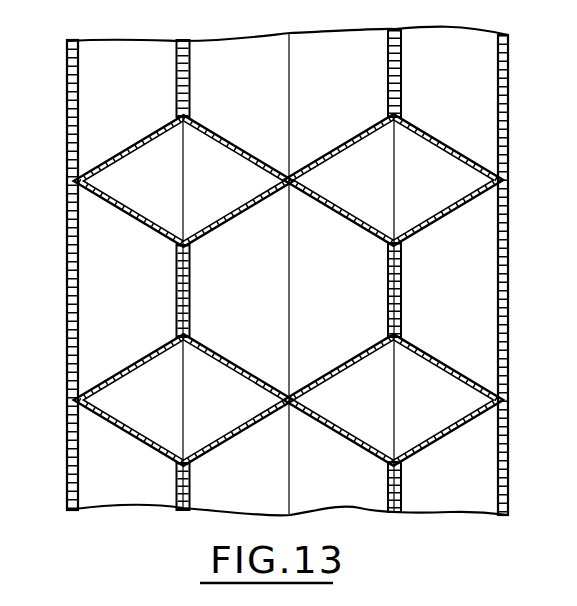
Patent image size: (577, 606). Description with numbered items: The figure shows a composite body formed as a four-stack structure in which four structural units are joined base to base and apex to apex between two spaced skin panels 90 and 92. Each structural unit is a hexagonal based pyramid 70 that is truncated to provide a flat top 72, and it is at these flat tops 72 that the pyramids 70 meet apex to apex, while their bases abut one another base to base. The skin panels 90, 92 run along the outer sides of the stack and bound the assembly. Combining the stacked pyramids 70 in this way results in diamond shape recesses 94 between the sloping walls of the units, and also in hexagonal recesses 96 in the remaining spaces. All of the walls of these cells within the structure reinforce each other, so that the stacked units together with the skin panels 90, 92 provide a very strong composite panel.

The hexagonal based pyramid 70 is at (140, 358).
The flat top 72 is at (176, 290).
The skin panel 90 is at (67, 243).
The skin panel 92 is at (509, 256).
The diamond shape recess 94 is at (148, 157).
The hexagonal recess 96 is at (242, 48).